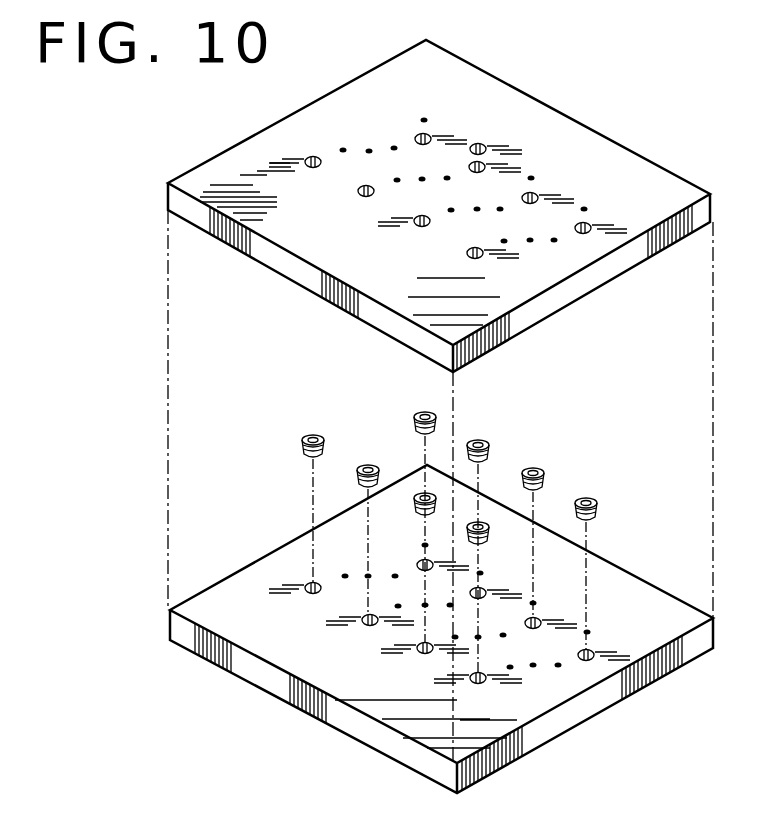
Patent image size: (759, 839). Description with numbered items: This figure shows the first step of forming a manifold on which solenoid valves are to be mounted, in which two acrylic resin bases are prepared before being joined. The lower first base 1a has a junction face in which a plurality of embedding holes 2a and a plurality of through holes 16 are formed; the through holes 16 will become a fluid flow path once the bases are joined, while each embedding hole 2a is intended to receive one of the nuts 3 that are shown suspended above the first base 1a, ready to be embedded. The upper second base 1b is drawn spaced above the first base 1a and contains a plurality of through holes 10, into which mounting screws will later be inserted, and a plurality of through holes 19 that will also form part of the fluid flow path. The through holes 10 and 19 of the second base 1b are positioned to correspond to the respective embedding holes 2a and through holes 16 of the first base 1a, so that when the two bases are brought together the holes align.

The first base 1a is at (368, 703).
The second base 1b is at (485, 110).
The embedding hole 2a is at (592, 658).
The nut 3 is at (479, 520).
The through hole 10 is at (592, 224).
The through hole 16 is at (508, 670).
The through hole 19 is at (394, 145).